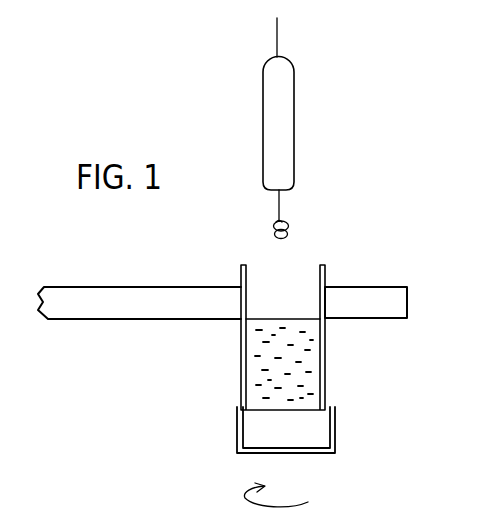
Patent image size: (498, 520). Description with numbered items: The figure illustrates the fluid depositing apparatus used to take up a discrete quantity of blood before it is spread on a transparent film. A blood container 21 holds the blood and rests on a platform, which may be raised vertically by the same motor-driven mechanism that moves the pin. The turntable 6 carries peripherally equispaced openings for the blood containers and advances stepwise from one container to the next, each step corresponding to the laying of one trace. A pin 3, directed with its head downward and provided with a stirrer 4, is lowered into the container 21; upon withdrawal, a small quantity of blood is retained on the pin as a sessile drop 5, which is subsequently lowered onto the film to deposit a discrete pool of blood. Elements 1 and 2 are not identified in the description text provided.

The melt 1 is at (297, 328).
The base 2 is at (238, 430).
The pin 3 is at (278, 57).
The stirrer 4 is at (294, 125).
The sessile drop 5 is at (292, 237).
The turntable 6 is at (367, 296).
The blood container 21 is at (325, 367).